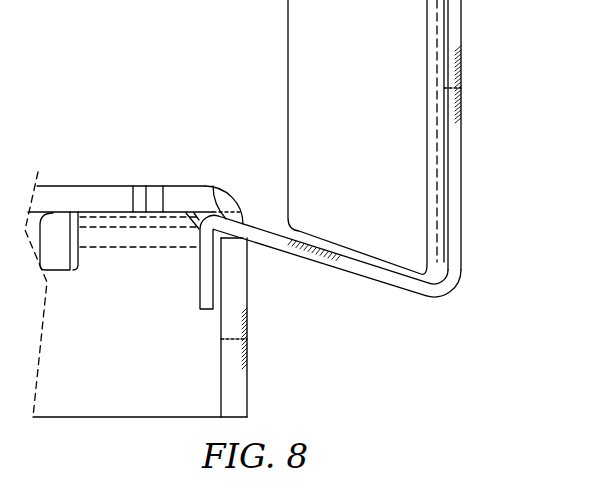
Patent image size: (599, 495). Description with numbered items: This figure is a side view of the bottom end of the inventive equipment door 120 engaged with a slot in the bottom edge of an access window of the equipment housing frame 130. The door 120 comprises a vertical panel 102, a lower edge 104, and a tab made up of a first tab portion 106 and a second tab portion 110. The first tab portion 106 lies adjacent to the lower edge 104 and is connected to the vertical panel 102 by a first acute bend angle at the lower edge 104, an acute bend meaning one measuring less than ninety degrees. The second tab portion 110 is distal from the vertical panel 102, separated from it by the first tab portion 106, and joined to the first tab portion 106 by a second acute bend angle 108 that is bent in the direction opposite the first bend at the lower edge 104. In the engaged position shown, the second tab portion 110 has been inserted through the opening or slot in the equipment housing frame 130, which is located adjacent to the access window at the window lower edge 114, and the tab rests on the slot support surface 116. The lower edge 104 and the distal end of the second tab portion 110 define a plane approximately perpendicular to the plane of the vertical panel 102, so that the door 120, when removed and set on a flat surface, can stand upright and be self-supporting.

The vertical panel 102 is at (453, 13).
The lower edge 104 is at (447, 295).
The first tab portion 106 is at (352, 275).
The second acute bend angle 108 is at (213, 185).
The second tab portion 110 is at (197, 293).
The window lower edge 114 is at (227, 198).
The slot support surface 116 is at (233, 240).
The door 120 is at (474, 71).
The equipment housing frame 130 is at (247, 386).